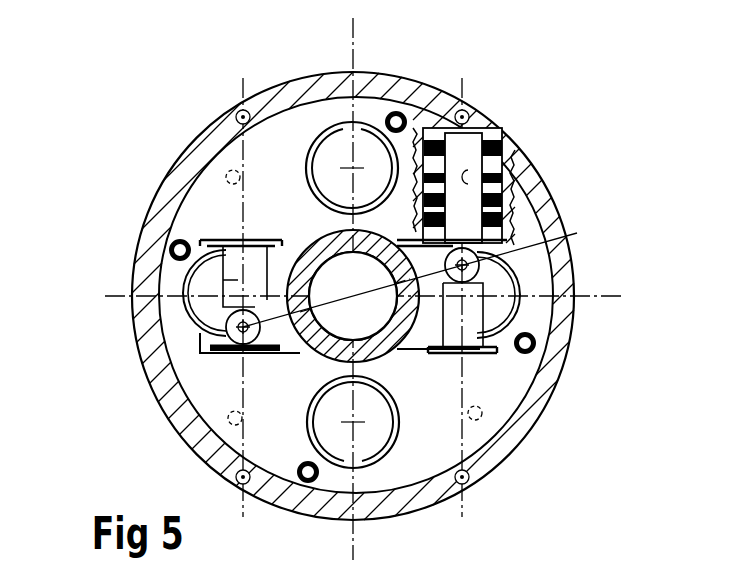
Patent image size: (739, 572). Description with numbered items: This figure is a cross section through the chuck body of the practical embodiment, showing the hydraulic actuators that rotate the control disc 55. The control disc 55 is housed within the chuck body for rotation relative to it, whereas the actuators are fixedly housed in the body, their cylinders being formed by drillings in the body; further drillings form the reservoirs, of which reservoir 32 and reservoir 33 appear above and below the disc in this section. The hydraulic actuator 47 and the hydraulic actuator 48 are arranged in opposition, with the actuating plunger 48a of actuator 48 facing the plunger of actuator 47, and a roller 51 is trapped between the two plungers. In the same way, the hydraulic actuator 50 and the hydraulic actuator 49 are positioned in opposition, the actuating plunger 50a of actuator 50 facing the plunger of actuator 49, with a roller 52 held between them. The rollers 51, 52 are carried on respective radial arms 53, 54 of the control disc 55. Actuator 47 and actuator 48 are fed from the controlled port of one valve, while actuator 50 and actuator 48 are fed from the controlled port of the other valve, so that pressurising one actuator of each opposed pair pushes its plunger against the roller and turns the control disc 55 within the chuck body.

The reservoir 32 is at (322, 130).
The reservoir 33 is at (367, 452).
The hydraulic actuator 47 is at (520, 157).
The hydraulic actuator 48 is at (503, 350).
The actuating plunger 48a is at (477, 310).
The hydraulic actuator 49 is at (203, 355).
The hydraulic actuator 50 is at (207, 237).
The actuating plunger 50a is at (183, 293).
The roller 51 is at (500, 276).
The roller 52 is at (243, 327).
The radial arm 53 is at (408, 352).
The radial arm 54 is at (297, 352).
The control disc 55 is at (328, 243).